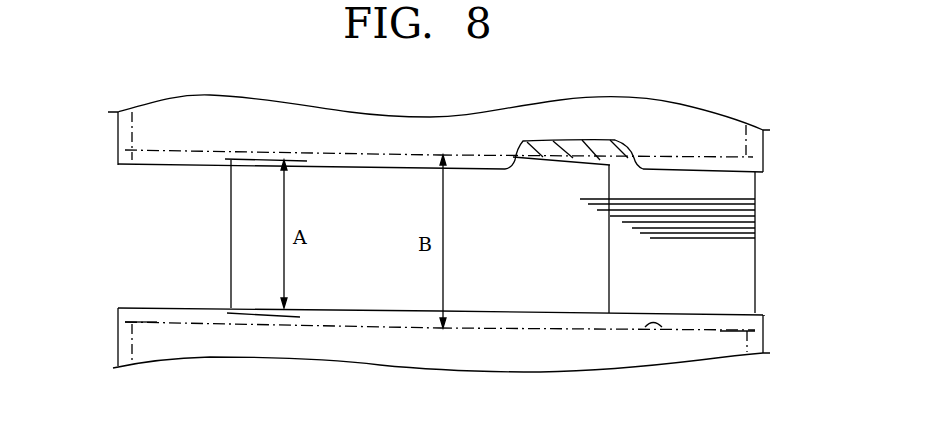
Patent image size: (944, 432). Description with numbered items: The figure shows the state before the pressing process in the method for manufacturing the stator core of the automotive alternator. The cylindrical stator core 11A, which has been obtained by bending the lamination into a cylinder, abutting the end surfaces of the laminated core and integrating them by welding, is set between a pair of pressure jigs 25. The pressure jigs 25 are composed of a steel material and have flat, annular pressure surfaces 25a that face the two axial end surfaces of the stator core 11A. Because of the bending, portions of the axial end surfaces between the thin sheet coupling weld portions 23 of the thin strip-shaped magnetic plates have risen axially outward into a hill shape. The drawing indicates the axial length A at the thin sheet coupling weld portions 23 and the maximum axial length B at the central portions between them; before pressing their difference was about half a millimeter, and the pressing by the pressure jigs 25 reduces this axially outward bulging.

The pressure jig 25 is at (740, 113).
The pressure surface 25a is at (618, 161).
The thin sheet coupling weld portion 23 is at (230, 288).
The stator core 11A is at (757, 200).